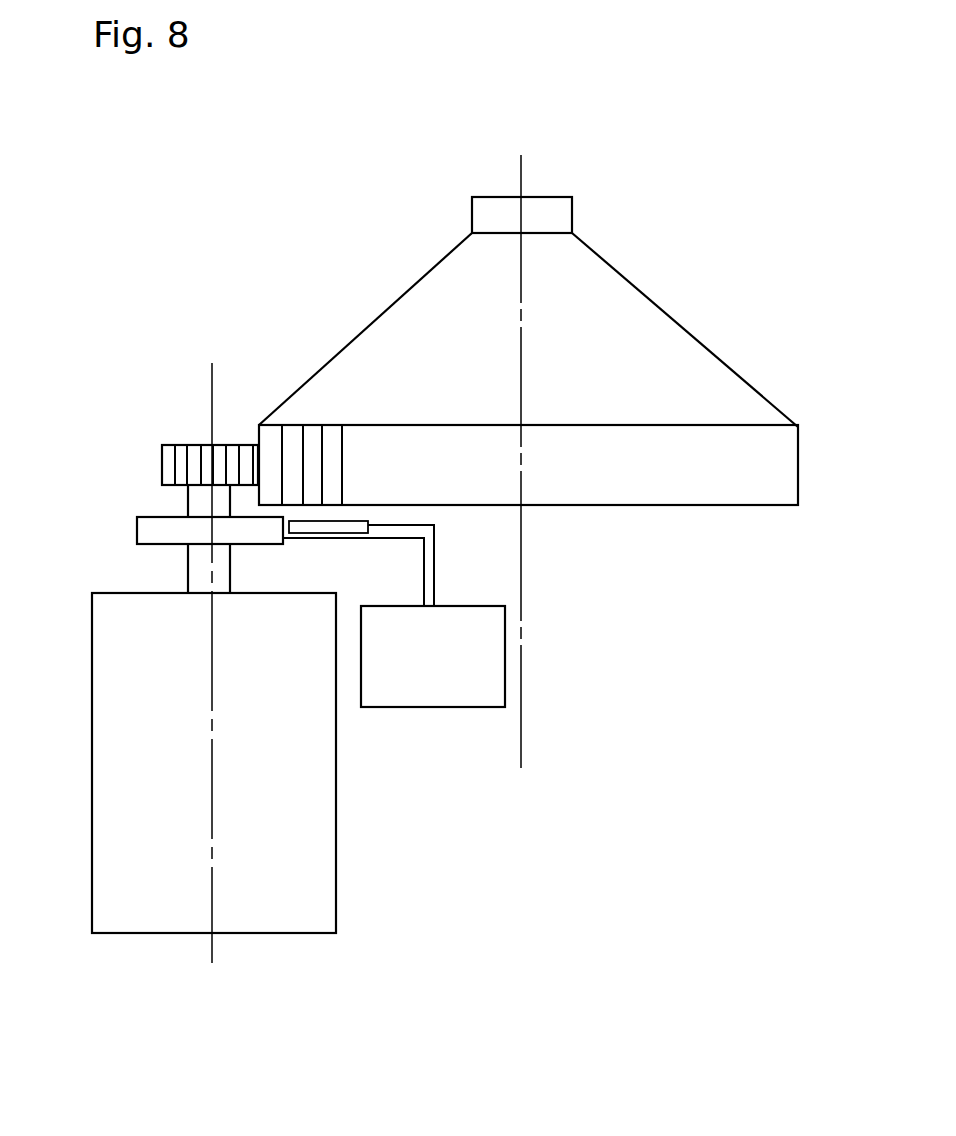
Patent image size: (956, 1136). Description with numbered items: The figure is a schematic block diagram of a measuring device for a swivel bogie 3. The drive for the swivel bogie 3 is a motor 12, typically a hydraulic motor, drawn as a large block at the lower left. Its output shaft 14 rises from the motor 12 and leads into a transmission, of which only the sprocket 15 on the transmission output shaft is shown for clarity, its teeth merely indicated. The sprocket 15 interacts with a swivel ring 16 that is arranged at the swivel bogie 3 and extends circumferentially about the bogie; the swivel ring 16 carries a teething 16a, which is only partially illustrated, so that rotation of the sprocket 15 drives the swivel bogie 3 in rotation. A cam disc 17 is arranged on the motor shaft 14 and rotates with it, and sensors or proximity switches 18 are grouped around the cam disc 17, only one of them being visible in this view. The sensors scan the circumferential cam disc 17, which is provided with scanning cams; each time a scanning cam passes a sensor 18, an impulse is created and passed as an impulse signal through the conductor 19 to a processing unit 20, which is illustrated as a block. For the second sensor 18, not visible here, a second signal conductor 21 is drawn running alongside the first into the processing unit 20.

The swivel bogie 3 is at (528, 461).
The swivel ring 16 is at (537, 530).
The teething 16a is at (280, 386).
The sprocket 15 is at (175, 410).
The output shaft 14 is at (127, 663).
The cam disc 17 is at (154, 492).
The sensor 18 is at (331, 556).
The conductor 19 is at (444, 563).
The second signal conductor 21 is at (499, 583).
The processing unit 20 is at (493, 659).
The drive 12 is at (287, 763).